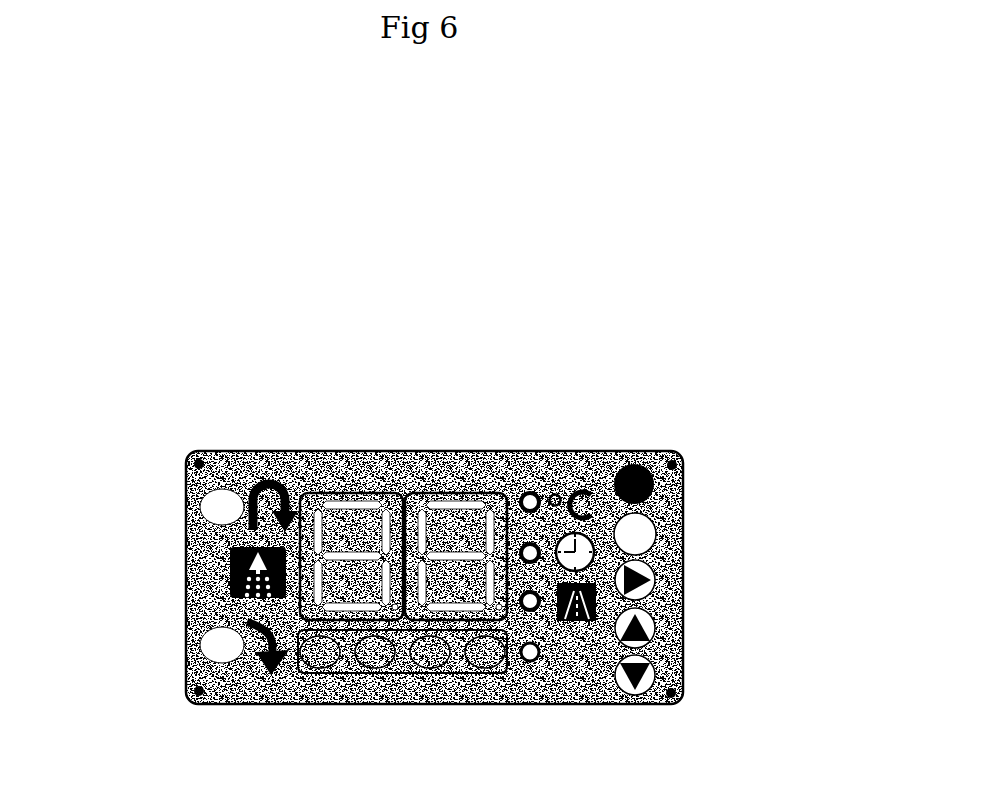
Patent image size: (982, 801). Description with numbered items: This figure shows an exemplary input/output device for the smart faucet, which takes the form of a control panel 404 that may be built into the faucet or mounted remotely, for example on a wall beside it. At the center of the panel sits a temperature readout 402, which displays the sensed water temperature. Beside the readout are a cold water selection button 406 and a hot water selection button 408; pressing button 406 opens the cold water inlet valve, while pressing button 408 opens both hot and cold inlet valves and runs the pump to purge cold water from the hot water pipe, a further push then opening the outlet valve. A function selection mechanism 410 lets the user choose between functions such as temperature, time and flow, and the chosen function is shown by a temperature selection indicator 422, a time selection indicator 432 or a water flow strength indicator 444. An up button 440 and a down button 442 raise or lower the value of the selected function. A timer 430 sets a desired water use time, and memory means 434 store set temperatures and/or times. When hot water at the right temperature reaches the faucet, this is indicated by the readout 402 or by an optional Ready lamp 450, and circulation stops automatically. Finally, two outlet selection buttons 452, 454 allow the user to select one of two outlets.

The temperature readout 402 is at (352, 496).
The control panel 404 is at (681, 452).
The cold water selection button 406 is at (635, 455).
The hot water selection button 408 is at (660, 512).
The function selection mechanism 410 is at (657, 580).
The temperature selection indicator 422 is at (529, 490).
The timer 430 is at (603, 551).
The time selection indicator 432 is at (525, 566).
The memory means 434 is at (355, 686).
The up button 440 is at (657, 629).
The down button 442 is at (670, 672).
The water flow strength indicator 444 is at (528, 616).
The Ready lamp 450 is at (536, 666).
The outlet selection button 452 is at (193, 505).
The outlet selection button 454 is at (193, 645).